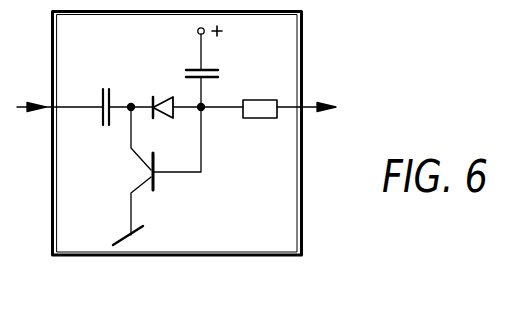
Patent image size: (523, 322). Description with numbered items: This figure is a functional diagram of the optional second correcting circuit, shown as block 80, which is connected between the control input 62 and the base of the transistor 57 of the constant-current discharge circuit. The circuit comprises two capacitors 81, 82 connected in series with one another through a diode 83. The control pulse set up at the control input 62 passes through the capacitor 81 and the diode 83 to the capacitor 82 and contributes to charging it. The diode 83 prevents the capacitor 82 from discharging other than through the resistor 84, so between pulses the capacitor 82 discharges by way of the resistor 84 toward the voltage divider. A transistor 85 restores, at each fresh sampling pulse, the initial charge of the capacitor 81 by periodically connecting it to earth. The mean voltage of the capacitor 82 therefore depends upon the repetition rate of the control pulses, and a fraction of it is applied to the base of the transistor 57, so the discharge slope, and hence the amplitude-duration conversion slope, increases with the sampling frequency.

The transistor 57 is at (318, 122).
The control input 62 is at (56, 122).
The block 80 is at (303, 40).
The capacitor 81 is at (100, 88).
The capacitor 82 is at (212, 68).
The diode 83 is at (172, 95).
The resistor 84 is at (268, 117).
The transistor 85 is at (156, 184).